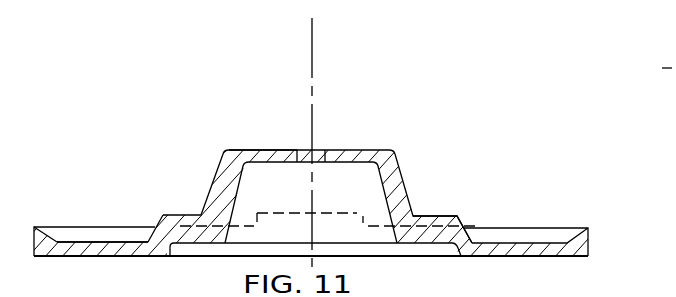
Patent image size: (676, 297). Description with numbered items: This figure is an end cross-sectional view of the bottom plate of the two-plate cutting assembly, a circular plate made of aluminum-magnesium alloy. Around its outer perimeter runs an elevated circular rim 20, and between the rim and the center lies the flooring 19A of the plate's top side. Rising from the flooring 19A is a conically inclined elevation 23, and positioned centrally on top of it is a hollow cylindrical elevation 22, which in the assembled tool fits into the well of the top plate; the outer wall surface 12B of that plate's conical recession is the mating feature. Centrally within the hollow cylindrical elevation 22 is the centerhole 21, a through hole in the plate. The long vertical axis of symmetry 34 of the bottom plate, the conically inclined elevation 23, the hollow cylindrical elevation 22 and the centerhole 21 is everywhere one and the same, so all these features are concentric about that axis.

The long vertical axis of symmetry 34 is at (313, 41).
The centerhole 21 is at (317, 154).
The hollow cylindrical elevation 22 is at (255, 150).
The outer wall surface of recession 12B is at (406, 175).
The elevated circular rim 20 is at (50, 226).
The flooring 19A is at (105, 242).
The conically inclined elevation 23 is at (459, 222).